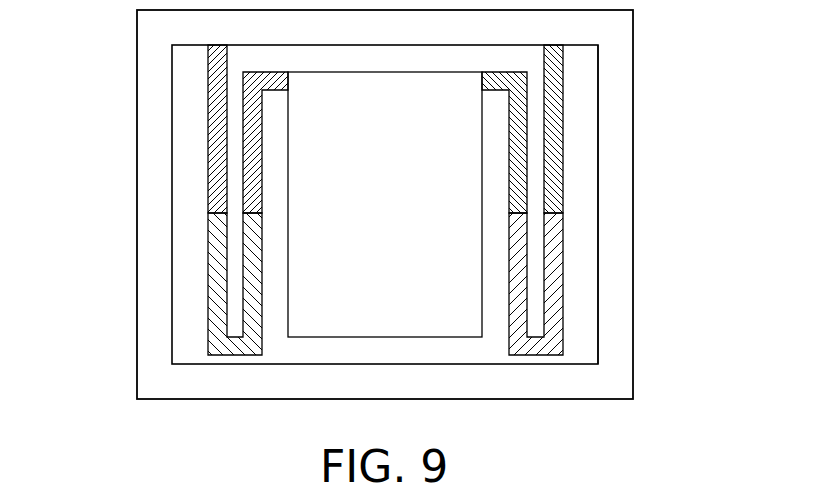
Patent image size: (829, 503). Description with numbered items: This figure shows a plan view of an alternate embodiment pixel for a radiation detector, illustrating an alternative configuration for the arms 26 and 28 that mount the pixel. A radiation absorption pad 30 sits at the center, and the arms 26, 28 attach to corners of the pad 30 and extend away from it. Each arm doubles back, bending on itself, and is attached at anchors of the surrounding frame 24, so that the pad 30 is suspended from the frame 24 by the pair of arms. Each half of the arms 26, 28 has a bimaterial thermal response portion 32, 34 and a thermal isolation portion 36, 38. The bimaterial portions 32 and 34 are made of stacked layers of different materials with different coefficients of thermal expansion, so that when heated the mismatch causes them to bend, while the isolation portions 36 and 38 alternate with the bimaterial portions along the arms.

The frame 24 is at (617, 353).
The arm 26 is at (180, 322).
The arm 28 is at (593, 304).
The radiation absorption pad 30 is at (438, 310).
The bimaterial thermal response portion 32 is at (243, 120).
The bimaterial thermal response portion 34 is at (518, 115).
The isolation portion 36 is at (253, 277).
The isolation portion 38 is at (528, 259).